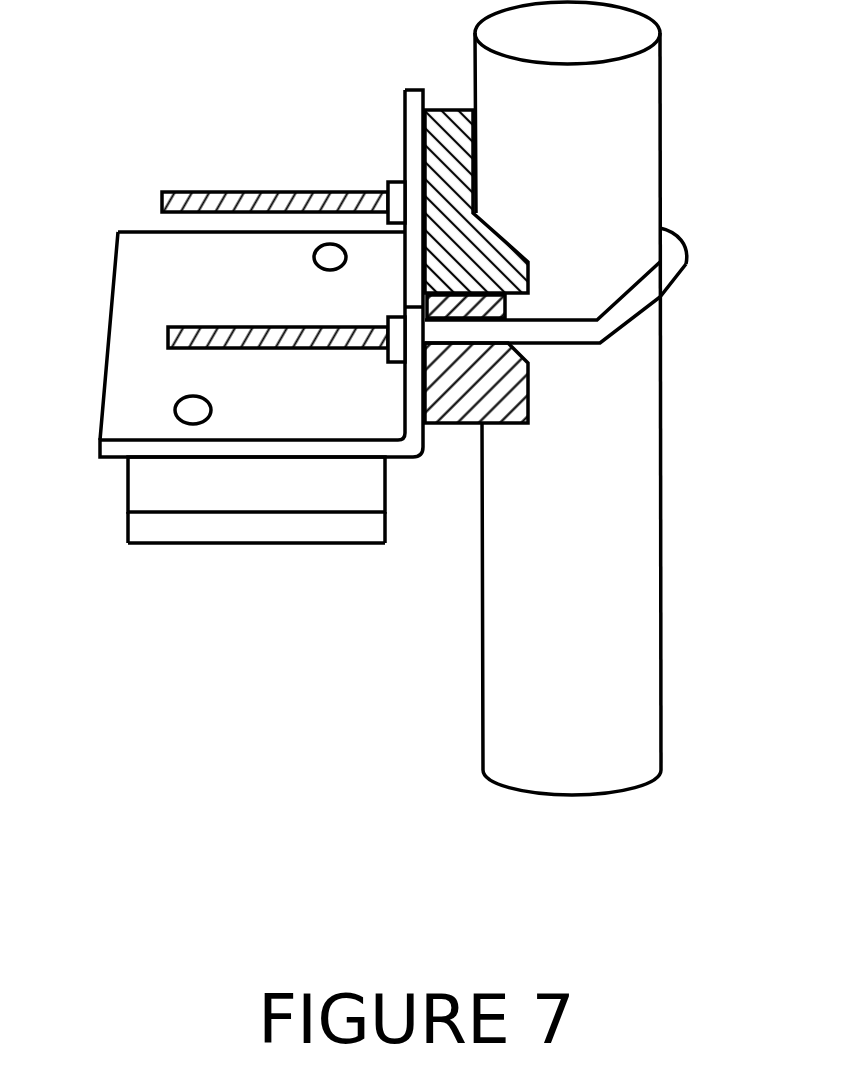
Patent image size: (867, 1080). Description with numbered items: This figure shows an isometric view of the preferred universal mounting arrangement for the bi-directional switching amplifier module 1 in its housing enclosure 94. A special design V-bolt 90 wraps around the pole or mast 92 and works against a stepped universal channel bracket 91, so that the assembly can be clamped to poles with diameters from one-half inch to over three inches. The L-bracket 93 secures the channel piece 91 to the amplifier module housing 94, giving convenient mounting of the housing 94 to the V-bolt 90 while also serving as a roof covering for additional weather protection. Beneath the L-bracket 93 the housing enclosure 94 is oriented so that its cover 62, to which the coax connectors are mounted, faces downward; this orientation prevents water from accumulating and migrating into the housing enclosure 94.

The bi-directional switching amplifier module 1 is at (155, 483).
The cover 62 is at (257, 547).
The V-bolt 90 is at (283, 187).
The universal channel bracket 91 is at (458, 107).
The pole or mast 92 is at (661, 547).
The L-bracket 93 is at (150, 290).
The housing enclosure 94 is at (128, 523).